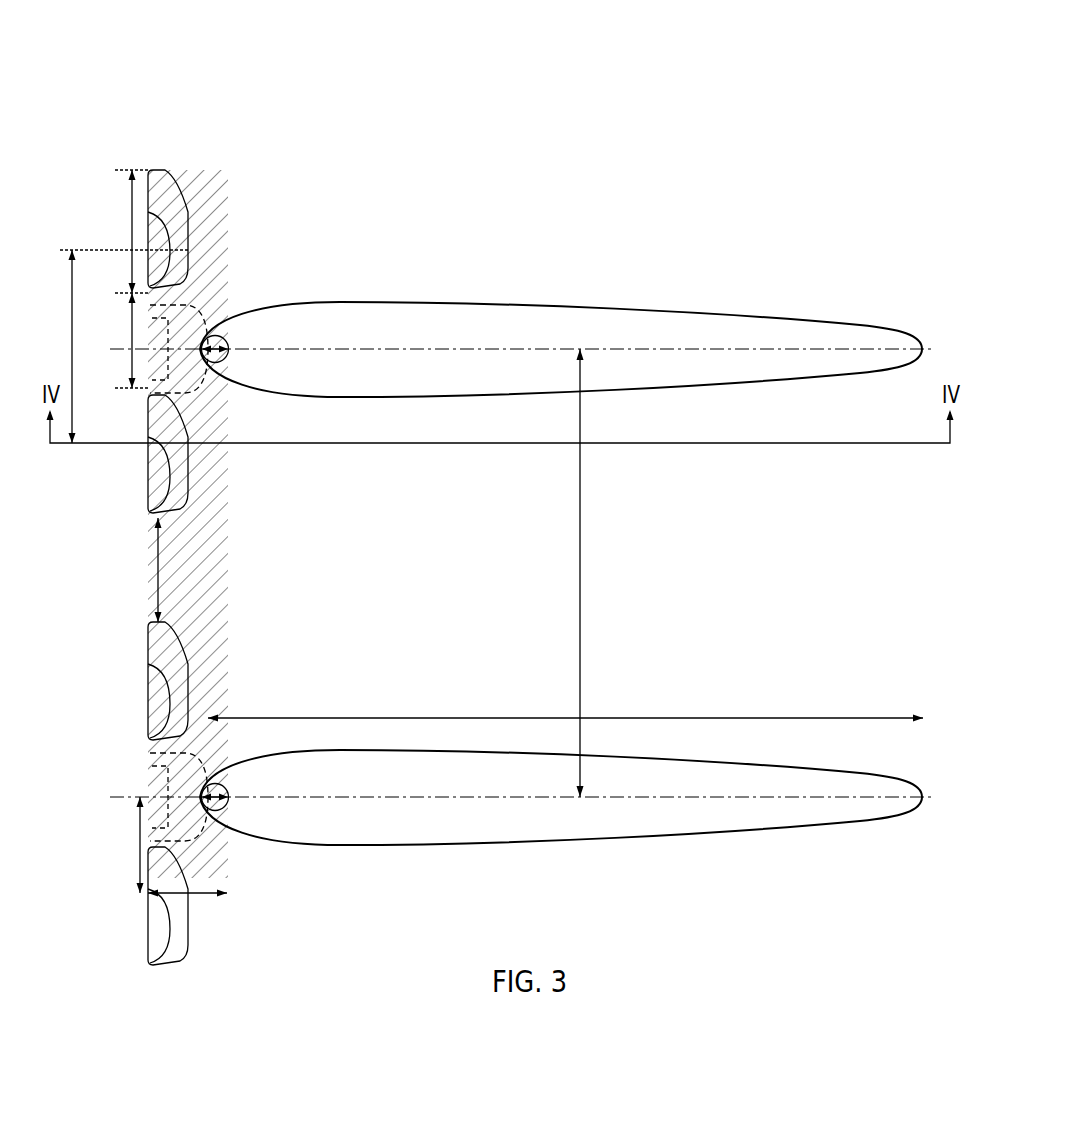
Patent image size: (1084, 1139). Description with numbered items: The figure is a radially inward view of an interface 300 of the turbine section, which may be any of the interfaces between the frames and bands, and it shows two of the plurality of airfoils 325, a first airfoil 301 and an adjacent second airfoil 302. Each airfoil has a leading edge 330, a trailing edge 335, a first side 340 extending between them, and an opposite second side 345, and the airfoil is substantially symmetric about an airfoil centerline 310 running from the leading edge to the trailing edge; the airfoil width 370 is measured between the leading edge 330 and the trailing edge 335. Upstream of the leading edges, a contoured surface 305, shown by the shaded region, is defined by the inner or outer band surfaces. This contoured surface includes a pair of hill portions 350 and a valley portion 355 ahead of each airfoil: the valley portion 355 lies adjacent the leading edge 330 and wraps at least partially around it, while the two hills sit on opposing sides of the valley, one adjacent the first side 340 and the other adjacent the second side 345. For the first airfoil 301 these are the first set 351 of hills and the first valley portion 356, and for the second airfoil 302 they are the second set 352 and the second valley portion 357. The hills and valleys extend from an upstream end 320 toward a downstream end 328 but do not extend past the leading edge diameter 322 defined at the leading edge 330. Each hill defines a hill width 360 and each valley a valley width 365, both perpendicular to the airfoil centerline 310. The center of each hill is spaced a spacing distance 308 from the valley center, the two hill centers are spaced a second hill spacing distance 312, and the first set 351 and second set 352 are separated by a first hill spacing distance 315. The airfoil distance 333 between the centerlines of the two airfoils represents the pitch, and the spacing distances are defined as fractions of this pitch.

The interface 300 is at (120, 76).
The first airfoil 301 is at (523, 382).
The second airfoil 302 is at (505, 832).
The contoured surface 305 is at (205, 190).
The spacing distance 308 is at (140, 843).
The airfoil centerline 310 is at (752, 349).
The second hill spacing distance 312 is at (73, 395).
The first hill spacing distance 315 is at (160, 580).
The upstream end 320 is at (90, 616).
The leading edge diameter 322 is at (213, 345).
The plurality of airfoils 325 is at (561, 573).
The downstream end 328 is at (866, 522).
The leading edge 330 is at (210, 362).
The airfoil distance 333 is at (581, 570).
The trailing edge 335 is at (925, 349).
The first side 340 is at (490, 302).
The second side 345 is at (480, 398).
The pair of hill portions 350 is at (248, 554).
The first set 351 is at (180, 185).
The second set 352 is at (188, 660).
The valley portion 355 is at (249, 566).
The first valley portion 356 is at (172, 318).
The second valley portion 357 is at (203, 818).
The hill width 360 is at (125, 227).
The valley width 365 is at (125, 362).
The airfoil width 370 is at (660, 718).